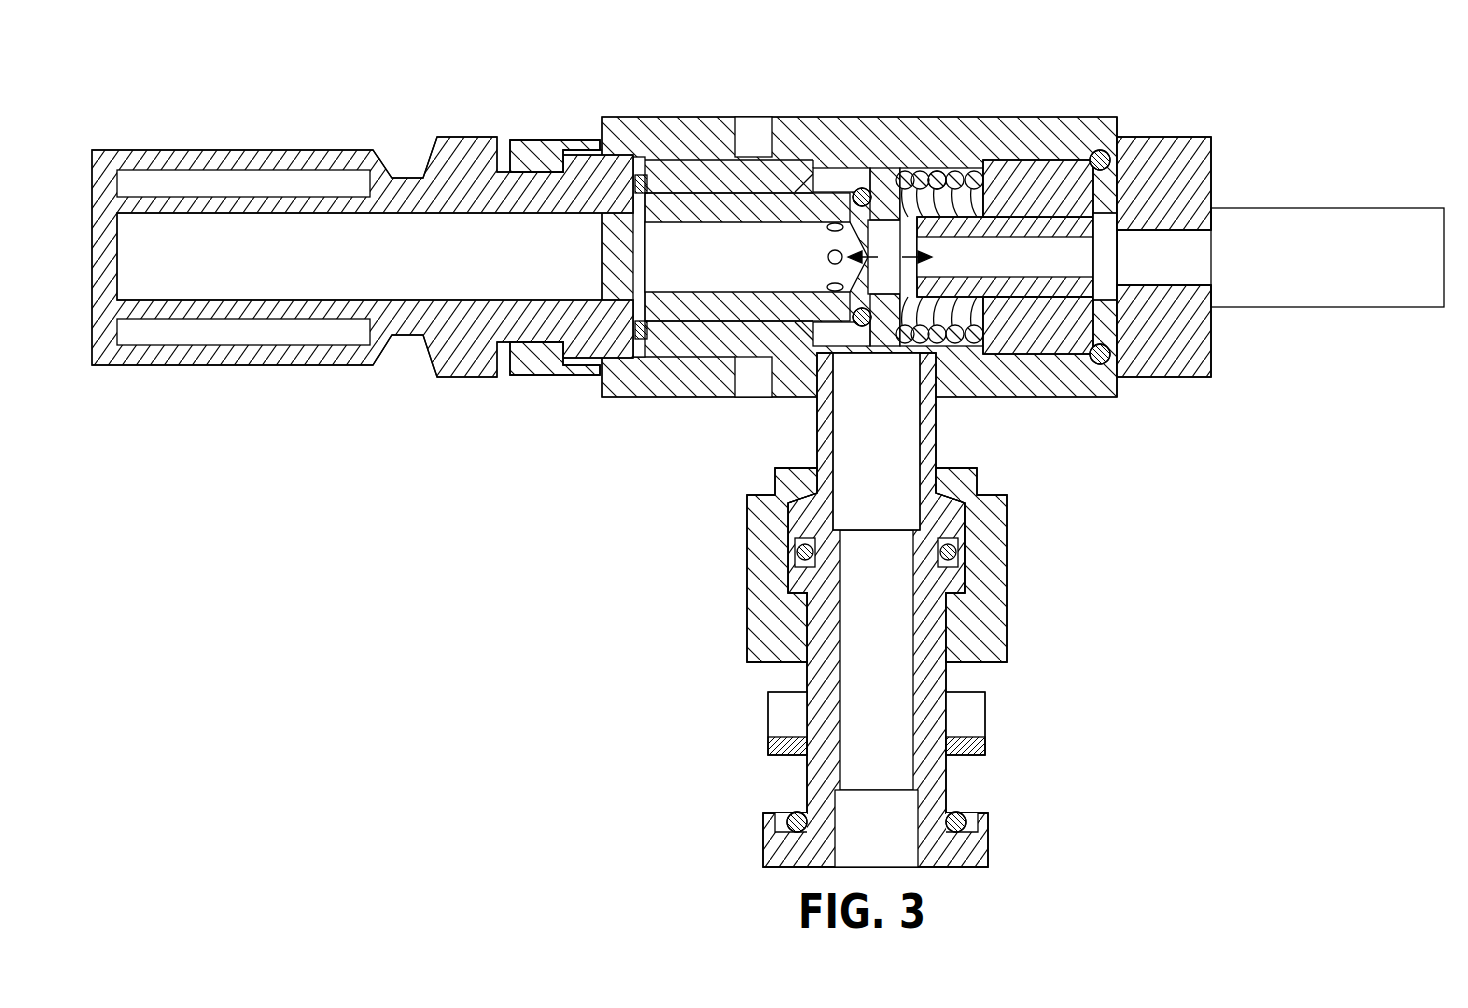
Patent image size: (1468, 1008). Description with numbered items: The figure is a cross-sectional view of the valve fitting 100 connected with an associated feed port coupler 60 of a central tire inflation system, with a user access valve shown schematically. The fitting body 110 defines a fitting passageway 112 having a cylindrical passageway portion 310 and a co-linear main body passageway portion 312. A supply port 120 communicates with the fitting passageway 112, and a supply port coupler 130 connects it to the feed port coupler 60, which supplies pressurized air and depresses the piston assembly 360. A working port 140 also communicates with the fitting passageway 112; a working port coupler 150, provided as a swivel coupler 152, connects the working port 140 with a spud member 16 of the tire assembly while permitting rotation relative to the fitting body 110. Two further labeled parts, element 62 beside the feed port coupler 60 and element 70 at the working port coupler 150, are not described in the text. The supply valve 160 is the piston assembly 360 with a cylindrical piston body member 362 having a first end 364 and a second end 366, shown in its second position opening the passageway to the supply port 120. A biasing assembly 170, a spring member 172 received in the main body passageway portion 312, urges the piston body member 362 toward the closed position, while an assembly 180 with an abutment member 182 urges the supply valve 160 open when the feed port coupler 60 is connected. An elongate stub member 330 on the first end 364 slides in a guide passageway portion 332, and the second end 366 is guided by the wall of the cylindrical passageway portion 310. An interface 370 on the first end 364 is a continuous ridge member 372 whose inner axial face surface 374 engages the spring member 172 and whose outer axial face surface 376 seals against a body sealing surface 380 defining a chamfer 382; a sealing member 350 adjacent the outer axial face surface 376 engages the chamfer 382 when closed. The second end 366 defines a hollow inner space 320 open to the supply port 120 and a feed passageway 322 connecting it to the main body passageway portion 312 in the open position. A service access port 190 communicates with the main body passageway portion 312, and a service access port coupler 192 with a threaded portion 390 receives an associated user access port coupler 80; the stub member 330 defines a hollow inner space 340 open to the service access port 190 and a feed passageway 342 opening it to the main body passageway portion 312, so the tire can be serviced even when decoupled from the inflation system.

The spud member 16 is at (815, 708).
The feed port coupler 60 is at (582, 120).
The supply tube 62 is at (157, 150).
The stem 70 is at (815, 633).
The user access port coupler 80 is at (1338, 260).
The valve fitting 100 is at (372, 570).
The fitting body 110 is at (888, 168).
The fitting passageway 112 is at (906, 167).
The supply port 120 is at (600, 148).
The supply port coupler 130 is at (662, 143).
The working port 140 is at (850, 510).
The working port coupler 150 is at (752, 580).
The swivel coupler 152 is at (790, 512).
The supply valve 160 is at (743, 182).
The biasing assembly 170 is at (987, 175).
The spring member 172 is at (1085, 160).
The assembly 180 is at (532, 416).
The abutment member 182 is at (635, 300).
The service access port 190 is at (1087, 160).
The service access port coupler 192 is at (1213, 168).
The cylindrical passageway portion 310 is at (700, 325).
The main body passageway portion 312 is at (1000, 300).
The hollow inner space 320 is at (673, 272).
The feed passageway 322 is at (818, 258).
The elongate stub member 330 is at (1055, 290).
The guide passageway portion 332 is at (1110, 150).
The hollow inner space 340 is at (981, 273).
The feed passageway 342 is at (1022, 240).
The sealing member 350 is at (835, 170).
The piston assembly 360 is at (874, 163).
The cylindrical piston body member 362 is at (905, 243).
The first end 364 is at (937, 166).
The second end 366 is at (725, 205).
The interface 370 is at (858, 190).
The continuous ridge member 372 is at (830, 330).
The inner axial face surface 374 is at (878, 334).
The outer axial face surface 376 is at (820, 328).
The body sealing surface 380 is at (805, 185).
The chamfer 382 is at (778, 190).
The threaded portion 390 is at (1185, 290).